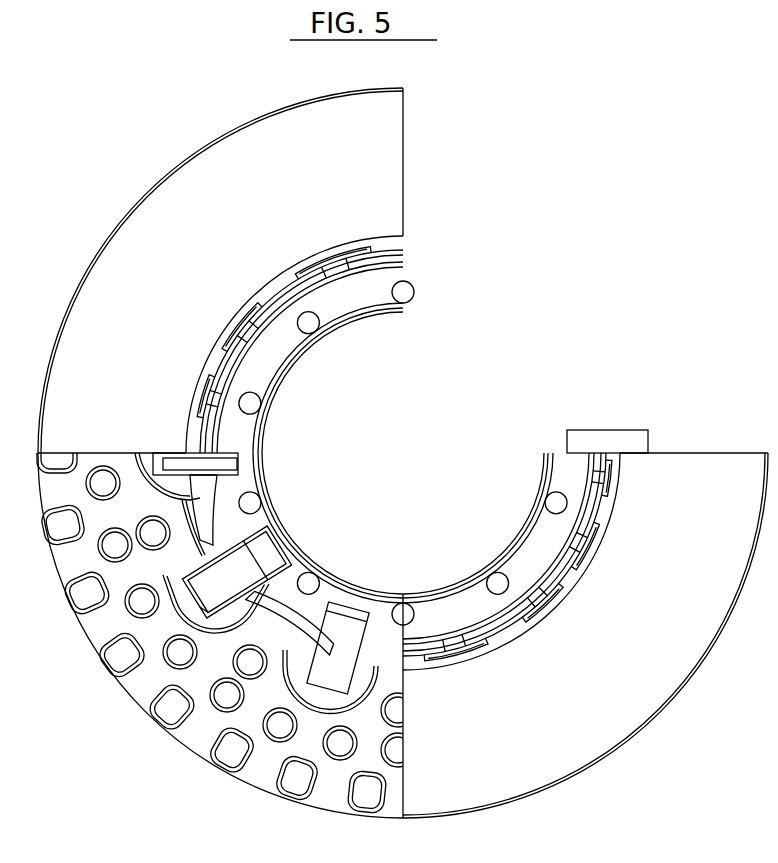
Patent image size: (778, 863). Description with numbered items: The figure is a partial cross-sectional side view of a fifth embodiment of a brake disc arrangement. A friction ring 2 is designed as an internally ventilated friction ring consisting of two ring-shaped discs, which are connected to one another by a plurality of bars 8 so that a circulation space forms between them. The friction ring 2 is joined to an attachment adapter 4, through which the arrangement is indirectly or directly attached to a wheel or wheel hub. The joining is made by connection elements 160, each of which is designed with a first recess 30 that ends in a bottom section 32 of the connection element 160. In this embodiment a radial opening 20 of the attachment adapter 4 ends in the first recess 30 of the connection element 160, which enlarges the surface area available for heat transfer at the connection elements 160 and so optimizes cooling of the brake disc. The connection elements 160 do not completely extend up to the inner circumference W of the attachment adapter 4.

The friction ring 2 is at (97, 633).
The attachment adapter 4 is at (252, 483).
The bars 8 is at (353, 700).
The radial opening 20 is at (280, 540).
The first recess 30 is at (262, 568).
The bottom section 32 is at (207, 604).
The connection element 160 is at (260, 532).
The inner circumference W is at (409, 587).